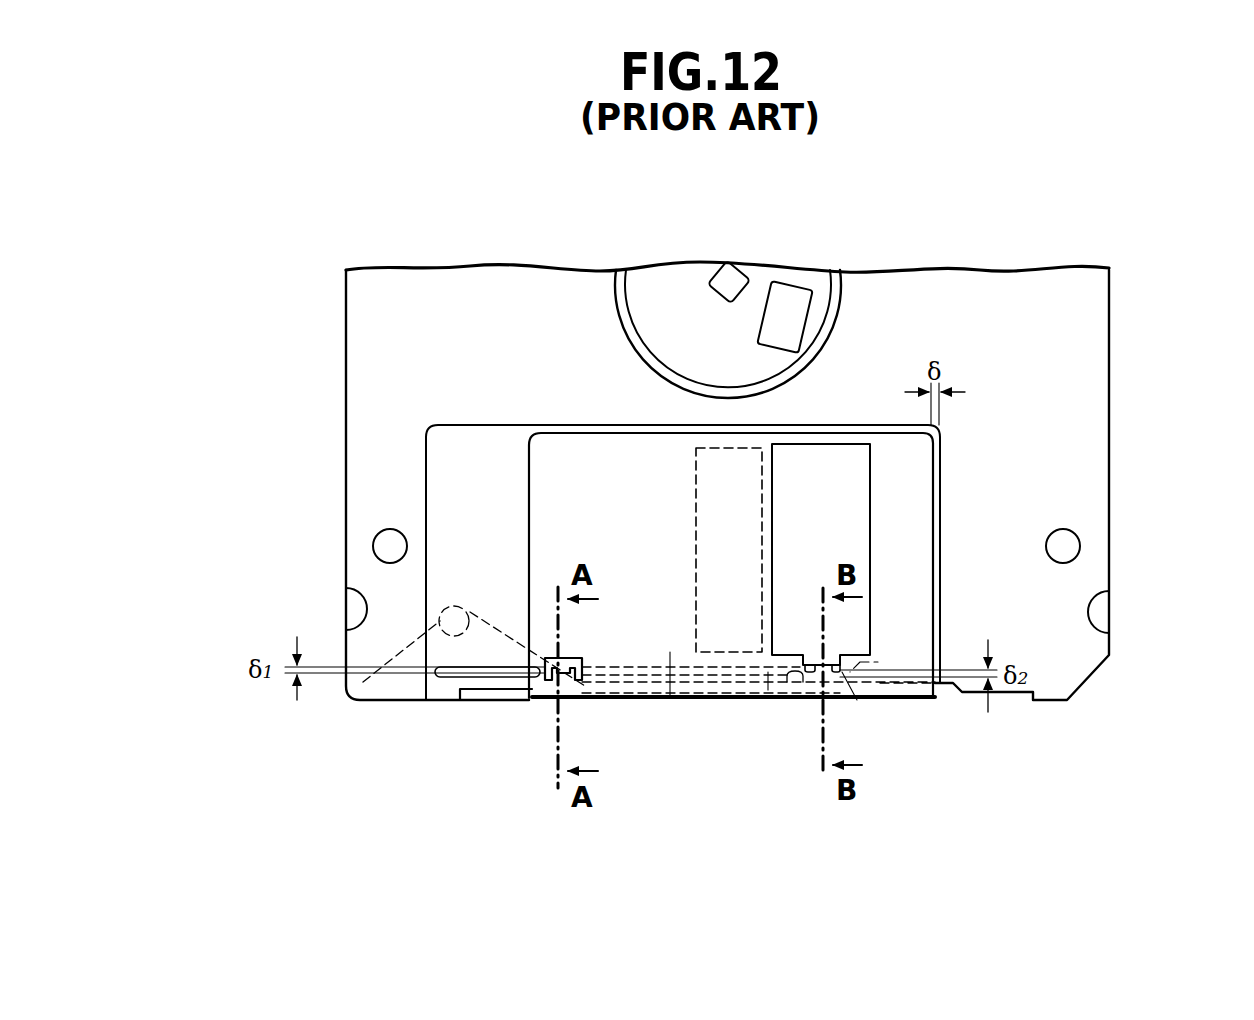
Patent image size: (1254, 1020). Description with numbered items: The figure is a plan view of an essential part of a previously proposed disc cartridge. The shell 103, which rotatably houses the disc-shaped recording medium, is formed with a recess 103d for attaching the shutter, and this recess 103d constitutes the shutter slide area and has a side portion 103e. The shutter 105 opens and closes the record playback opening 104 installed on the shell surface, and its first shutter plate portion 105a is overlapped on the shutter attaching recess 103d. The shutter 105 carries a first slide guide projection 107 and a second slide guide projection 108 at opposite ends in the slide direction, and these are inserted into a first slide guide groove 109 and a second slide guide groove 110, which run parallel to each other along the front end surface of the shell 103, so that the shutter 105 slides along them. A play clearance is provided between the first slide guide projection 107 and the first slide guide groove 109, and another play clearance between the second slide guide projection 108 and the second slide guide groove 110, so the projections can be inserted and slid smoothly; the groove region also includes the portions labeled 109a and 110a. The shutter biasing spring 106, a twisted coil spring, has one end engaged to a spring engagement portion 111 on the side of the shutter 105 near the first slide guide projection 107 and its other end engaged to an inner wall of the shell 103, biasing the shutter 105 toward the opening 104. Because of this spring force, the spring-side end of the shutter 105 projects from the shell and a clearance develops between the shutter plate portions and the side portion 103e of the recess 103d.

The shell 103 is at (346, 547).
The recess 103d is at (448, 462).
The side portion 103e is at (940, 452).
The record playback opening 104 is at (725, 640).
The shutter 105 is at (914, 701).
The first shutter plate portion 105a is at (670, 697).
The shutter biasing spring 106 is at (395, 646).
The first slide guide projection 107 is at (548, 662).
The second slide guide projection 108 is at (843, 693).
The first slide guide groove 109 is at (437, 697).
The plate portion 109a is at (522, 697).
The second slide guide groove 110 is at (768, 690).
The tab 110a is at (788, 683).
The spring engagement portion 111 is at (600, 705).